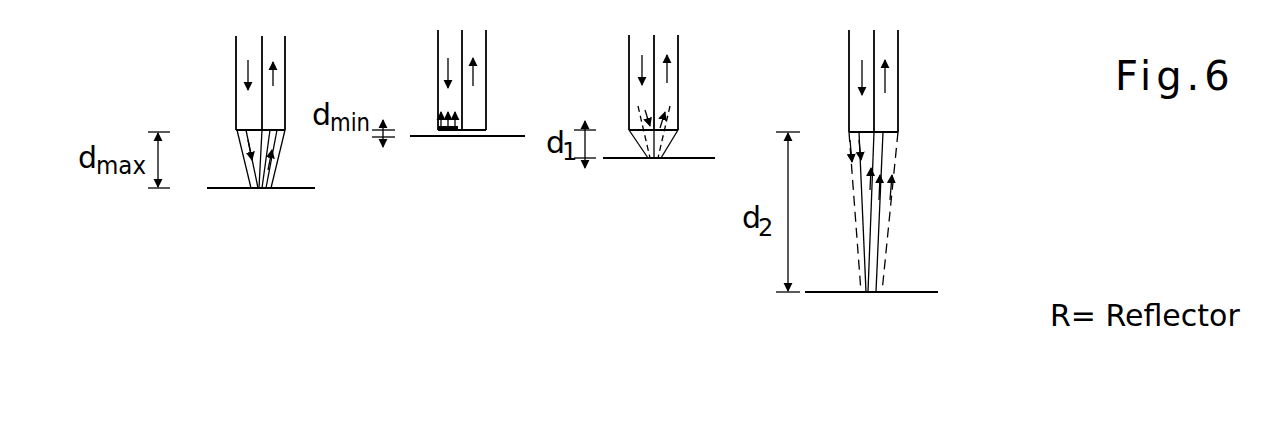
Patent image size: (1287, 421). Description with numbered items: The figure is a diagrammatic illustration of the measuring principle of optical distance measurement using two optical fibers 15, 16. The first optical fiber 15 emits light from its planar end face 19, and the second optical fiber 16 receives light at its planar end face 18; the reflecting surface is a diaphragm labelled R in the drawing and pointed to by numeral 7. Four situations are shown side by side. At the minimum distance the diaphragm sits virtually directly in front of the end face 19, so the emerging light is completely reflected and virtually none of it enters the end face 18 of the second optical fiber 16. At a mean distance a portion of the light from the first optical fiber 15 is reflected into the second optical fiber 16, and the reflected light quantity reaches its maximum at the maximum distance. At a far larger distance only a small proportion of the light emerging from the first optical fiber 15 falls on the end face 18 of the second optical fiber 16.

The reflector 7 is at (215, 192).
The first optical fiber 15 is at (243, 56).
The second optical fiber 16 is at (277, 52).
The end face of the second optical fiber 18 is at (280, 139).
The end face of the first optical fiber 19 is at (237, 137).